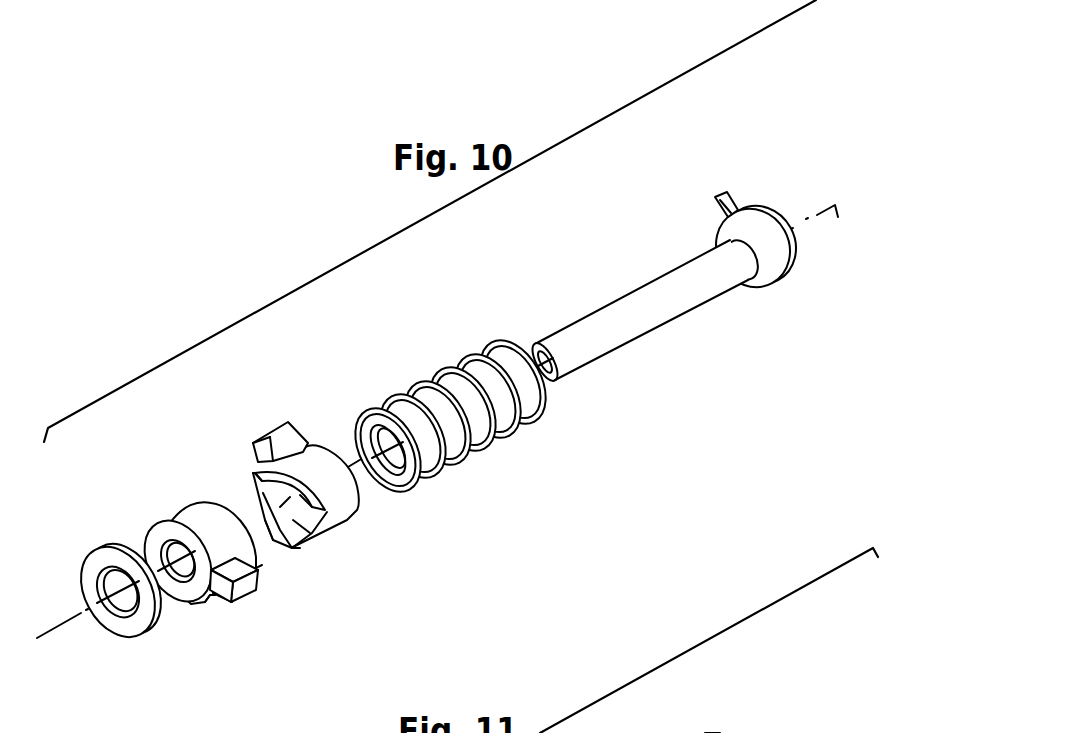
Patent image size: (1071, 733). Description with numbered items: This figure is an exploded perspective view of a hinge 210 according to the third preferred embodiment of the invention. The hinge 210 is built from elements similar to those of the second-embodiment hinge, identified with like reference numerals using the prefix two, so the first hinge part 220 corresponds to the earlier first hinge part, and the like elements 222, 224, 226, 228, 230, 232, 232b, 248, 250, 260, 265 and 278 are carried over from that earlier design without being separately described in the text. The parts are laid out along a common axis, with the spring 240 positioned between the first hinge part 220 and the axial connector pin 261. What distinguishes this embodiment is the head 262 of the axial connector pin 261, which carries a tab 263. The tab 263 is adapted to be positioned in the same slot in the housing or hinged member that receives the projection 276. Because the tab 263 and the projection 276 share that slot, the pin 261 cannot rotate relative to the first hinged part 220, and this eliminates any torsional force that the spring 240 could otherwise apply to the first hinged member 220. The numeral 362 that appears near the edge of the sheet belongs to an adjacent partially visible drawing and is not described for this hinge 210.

The hinge 210 is at (382, 380).
The first hinge part 220 is at (340, 522).
The axis 222 is at (838, 208).
The jaw 224 is at (295, 538).
The jaw edge 226 is at (250, 477).
The jaw bottom 228 is at (274, 556).
The ring member 230 is at (167, 522).
The lug 232 is at (252, 520).
The tab 232b is at (256, 575).
The spring 240 is at (450, 368).
The jaw face 248 is at (312, 535).
The washer 250 is at (120, 540).
The shaft 260 is at (631, 294).
The axial connector pin 261 is at (696, 292).
The head 262 is at (771, 218).
The tab 263 is at (720, 198).
The washer rim 265 is at (151, 636).
The projection 276 is at (284, 426).
The notch 278 is at (216, 598).
The flange 362 is at (712, 732).